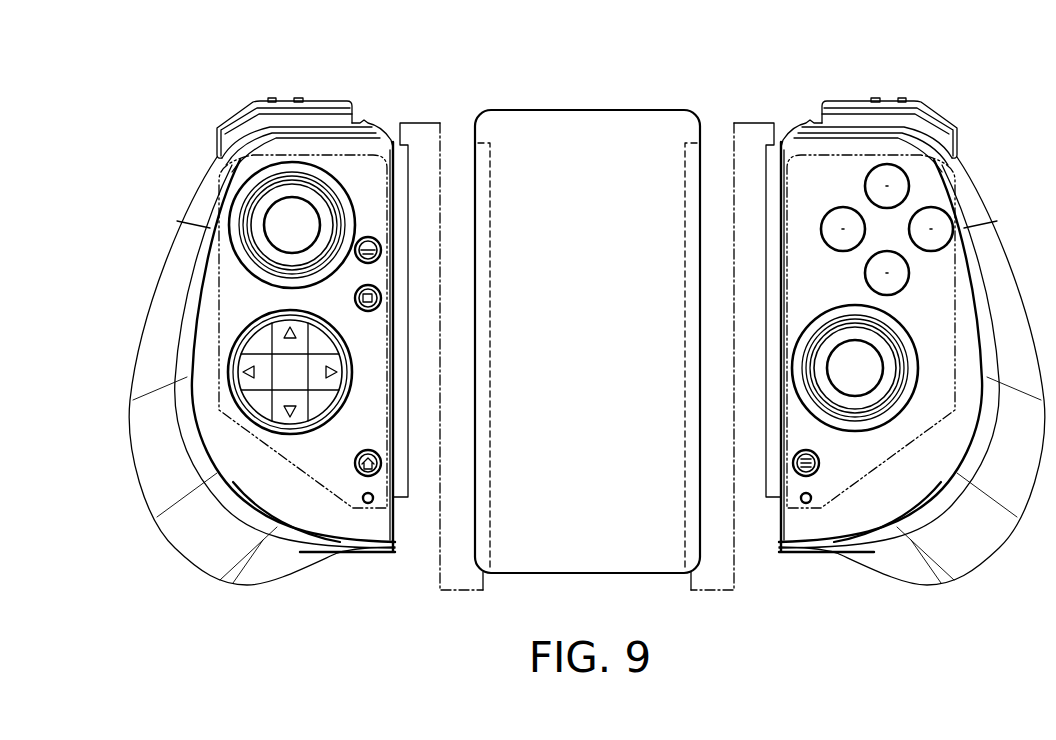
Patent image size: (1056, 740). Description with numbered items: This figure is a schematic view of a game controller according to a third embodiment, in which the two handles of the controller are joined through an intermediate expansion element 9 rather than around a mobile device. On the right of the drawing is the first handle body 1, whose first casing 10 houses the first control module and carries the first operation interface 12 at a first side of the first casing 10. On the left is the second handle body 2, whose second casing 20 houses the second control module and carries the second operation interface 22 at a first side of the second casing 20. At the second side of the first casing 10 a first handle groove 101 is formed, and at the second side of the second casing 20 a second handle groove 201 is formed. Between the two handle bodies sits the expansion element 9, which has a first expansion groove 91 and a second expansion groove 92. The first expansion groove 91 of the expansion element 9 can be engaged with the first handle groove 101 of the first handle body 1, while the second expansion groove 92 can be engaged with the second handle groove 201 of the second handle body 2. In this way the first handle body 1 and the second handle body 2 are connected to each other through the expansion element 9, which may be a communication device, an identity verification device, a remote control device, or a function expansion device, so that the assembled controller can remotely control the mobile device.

The first handle body 1 is at (987, 183).
The second handle body 2 is at (190, 183).
The expansion element 9 is at (587, 153).
The first casing 10 is at (968, 553).
The second casing 20 is at (205, 553).
The first operation interface 12 is at (855, 152).
The second operation interface 22 is at (330, 150).
The first expansion groove 91 is at (694, 160).
The second expansion groove 92 is at (480, 160).
The first handle groove 101 is at (771, 157).
The second handle groove 201 is at (404, 156).